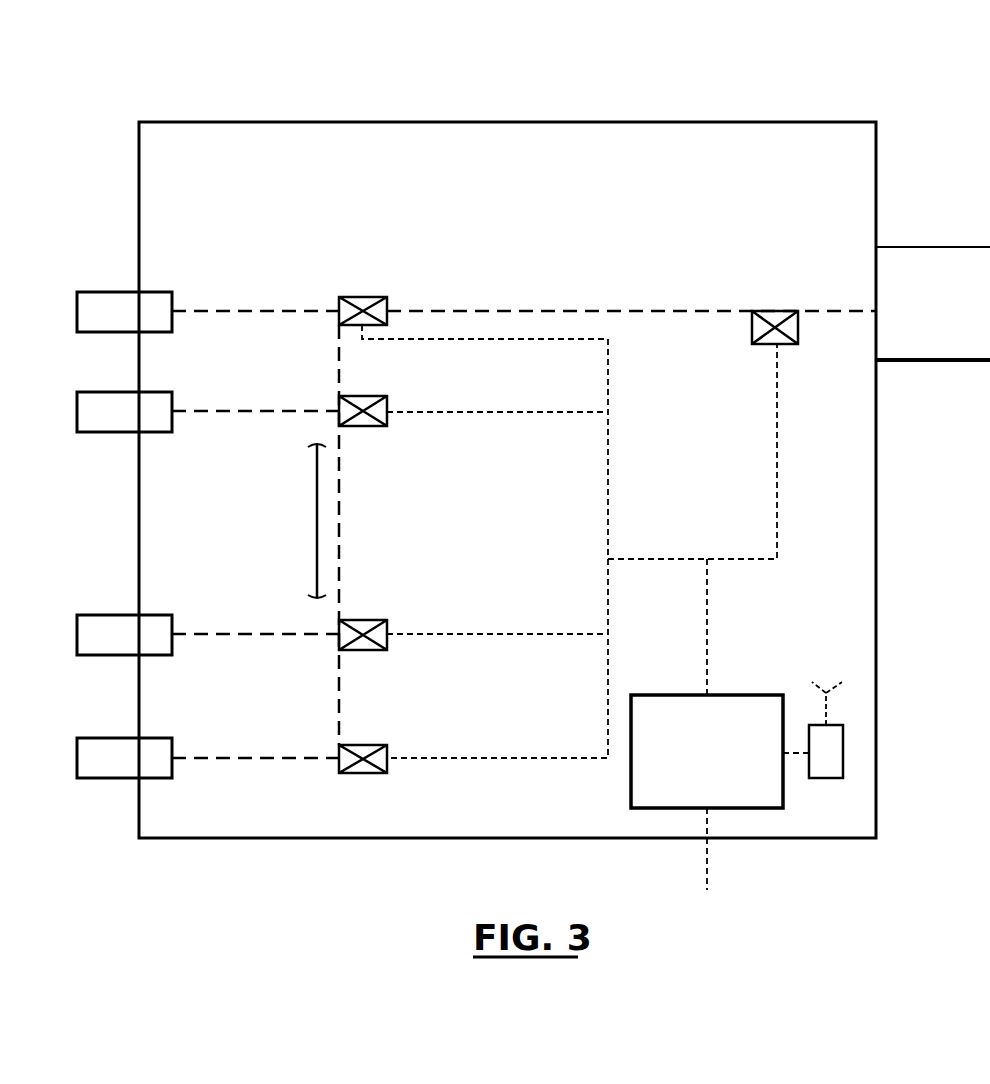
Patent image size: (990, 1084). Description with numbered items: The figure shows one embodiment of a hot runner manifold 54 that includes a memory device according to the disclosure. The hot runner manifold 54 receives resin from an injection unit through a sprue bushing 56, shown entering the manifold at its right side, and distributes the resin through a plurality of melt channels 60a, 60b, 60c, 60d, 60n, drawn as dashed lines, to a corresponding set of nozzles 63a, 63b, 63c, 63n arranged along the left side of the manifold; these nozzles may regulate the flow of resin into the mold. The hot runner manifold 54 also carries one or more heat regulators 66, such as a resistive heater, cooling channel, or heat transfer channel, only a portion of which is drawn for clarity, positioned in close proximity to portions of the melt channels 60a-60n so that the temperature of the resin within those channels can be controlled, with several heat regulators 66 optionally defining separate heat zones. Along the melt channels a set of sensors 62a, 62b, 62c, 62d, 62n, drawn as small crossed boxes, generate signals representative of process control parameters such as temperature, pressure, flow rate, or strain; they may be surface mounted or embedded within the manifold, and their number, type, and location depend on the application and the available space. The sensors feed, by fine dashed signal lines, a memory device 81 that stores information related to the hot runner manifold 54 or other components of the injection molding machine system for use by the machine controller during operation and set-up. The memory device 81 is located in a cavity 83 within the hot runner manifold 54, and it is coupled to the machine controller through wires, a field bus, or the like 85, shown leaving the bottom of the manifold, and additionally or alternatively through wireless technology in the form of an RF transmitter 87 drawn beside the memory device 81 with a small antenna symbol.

The hot runner manifold 54 is at (512, 122).
The sprue bushing 56 is at (952, 313).
The melt channel 60a is at (582, 311).
The melt channel 60b is at (277, 311).
The melt channel 60c is at (277, 411).
The melt channel 60d is at (273, 634).
The melt channel 60n is at (273, 758).
The sensor 62a is at (752, 331).
The sensor 62b is at (362, 297).
The sensor 62c is at (365, 396).
The sensor 62d is at (363, 620).
The sensor 62n is at (363, 745).
The nozzle 63a is at (150, 327).
The nozzle 63b is at (150, 427).
The nozzle 63c is at (150, 650).
The nozzle 63n is at (150, 773).
The heat regulator 66 is at (317, 508).
The memory device 81 is at (726, 767).
The cavity 83 is at (738, 695).
The wires or field bus 85 is at (707, 875).
The RF transmitter 87 is at (843, 753).